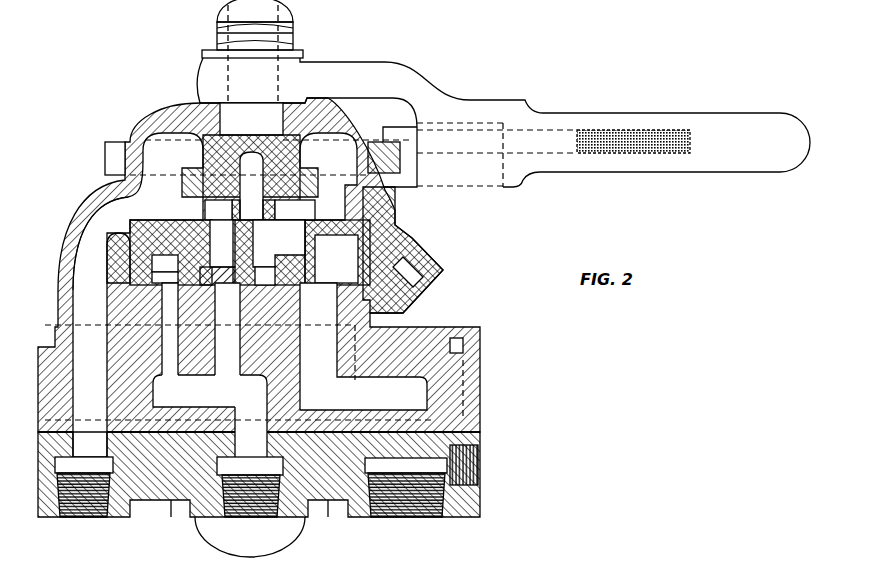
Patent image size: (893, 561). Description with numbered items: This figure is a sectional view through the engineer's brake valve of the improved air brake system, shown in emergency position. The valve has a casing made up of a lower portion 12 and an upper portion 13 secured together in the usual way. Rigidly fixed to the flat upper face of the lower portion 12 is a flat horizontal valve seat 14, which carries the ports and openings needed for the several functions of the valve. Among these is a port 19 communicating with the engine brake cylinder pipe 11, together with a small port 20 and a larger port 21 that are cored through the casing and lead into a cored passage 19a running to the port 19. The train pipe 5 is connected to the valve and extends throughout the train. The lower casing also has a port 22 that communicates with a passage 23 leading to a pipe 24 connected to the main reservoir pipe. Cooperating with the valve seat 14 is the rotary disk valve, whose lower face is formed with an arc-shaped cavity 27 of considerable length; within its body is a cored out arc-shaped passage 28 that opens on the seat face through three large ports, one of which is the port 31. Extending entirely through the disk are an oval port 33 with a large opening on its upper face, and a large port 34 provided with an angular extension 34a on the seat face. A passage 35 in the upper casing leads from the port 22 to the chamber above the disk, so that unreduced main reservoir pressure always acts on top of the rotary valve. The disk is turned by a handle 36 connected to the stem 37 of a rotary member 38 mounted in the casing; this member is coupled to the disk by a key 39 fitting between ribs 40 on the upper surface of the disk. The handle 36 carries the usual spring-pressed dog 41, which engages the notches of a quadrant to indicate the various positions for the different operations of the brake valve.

The train pipe 5 is at (397, 517).
The engine brake cylinder pipe 11 is at (245, 517).
The lower portion of casing 12 is at (478, 505).
The upper portion of casing 13 is at (90, 194).
The valve seat 14 is at (270, 305).
The port 19 is at (251, 432).
The cored passage 19a is at (210, 370).
The small port 20 is at (171, 329).
The larger port 21 is at (227, 329).
The port 22 is at (138, 295).
The passage 23 is at (90, 444).
The pipe 24 is at (84, 517).
The arc-shaped cavity 27 is at (337, 252).
The cored out arc-shaped passage 28 is at (171, 252).
The large port 31 is at (165, 276).
The oval port 33 is at (269, 252).
The large port 34 is at (222, 243).
The angular extension 34a is at (217, 277).
The passage 35 is at (101, 243).
The handle 36 is at (626, 111).
The stem 37 is at (251, 119).
The rotary member 38 is at (313, 193).
The key 39 is at (276, 212).
The ribs 40 is at (214, 209).
The spring-pressed dog 41 is at (402, 128).